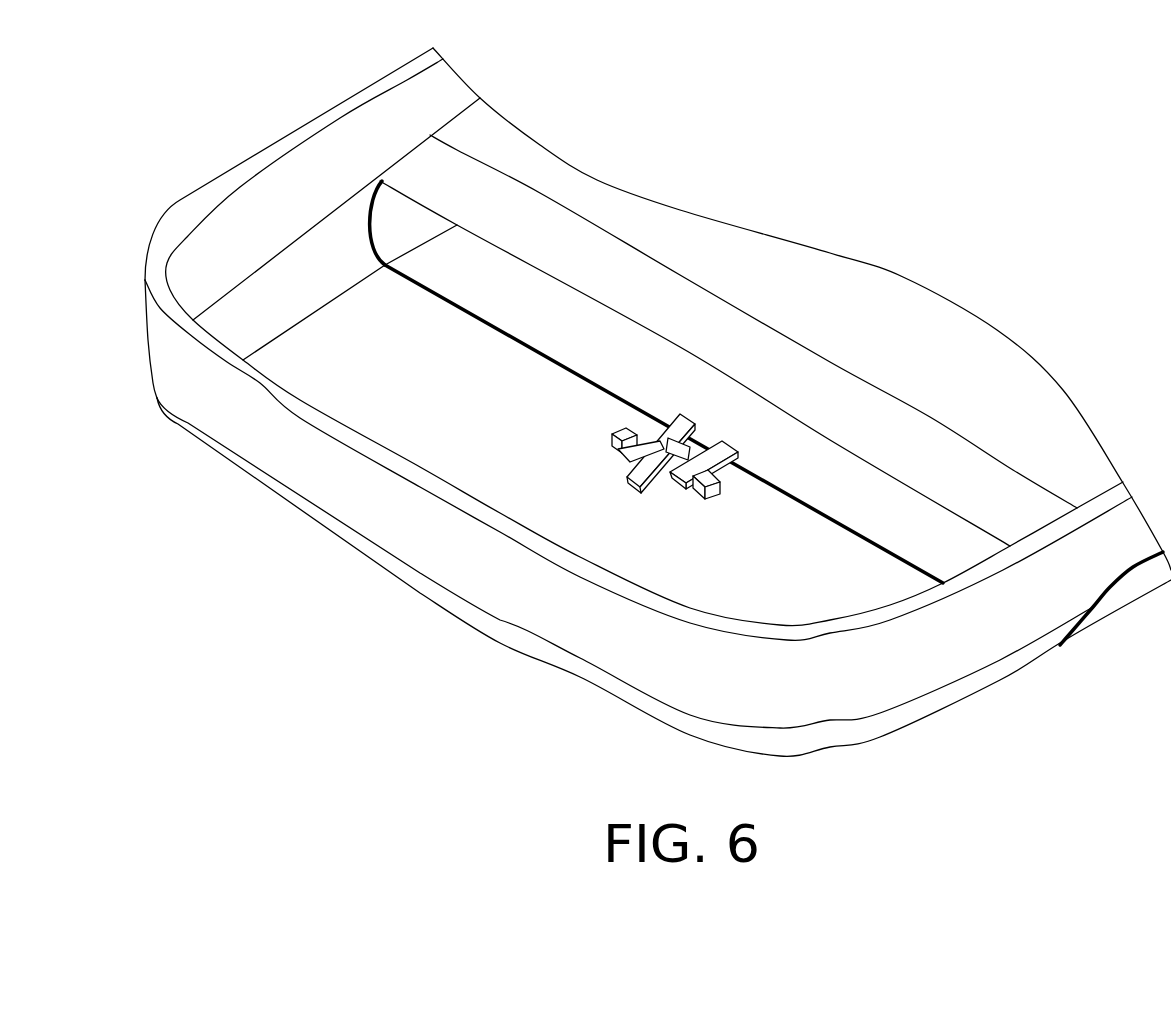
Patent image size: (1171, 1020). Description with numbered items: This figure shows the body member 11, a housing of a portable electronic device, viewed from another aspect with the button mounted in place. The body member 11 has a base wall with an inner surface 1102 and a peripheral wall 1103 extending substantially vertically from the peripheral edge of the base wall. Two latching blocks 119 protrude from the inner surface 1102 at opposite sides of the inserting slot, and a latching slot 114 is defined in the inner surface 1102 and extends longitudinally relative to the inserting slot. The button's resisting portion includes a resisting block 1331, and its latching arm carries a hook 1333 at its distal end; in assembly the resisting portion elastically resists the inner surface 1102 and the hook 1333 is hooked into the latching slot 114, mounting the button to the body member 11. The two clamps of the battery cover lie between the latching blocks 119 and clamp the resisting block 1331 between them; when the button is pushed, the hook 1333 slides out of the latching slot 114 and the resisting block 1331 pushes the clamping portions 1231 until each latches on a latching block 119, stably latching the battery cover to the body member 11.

The body member 11 is at (347, 488).
The latching slot 114 is at (643, 490).
The latching blocks 119 is at (633, 428).
The inner surface 1102 is at (815, 570).
The peripheral wall 1103 is at (1003, 612).
The clamping portion 1231 is at (616, 448).
The resisting block 1331 is at (697, 443).
The hook 1333 is at (647, 493).